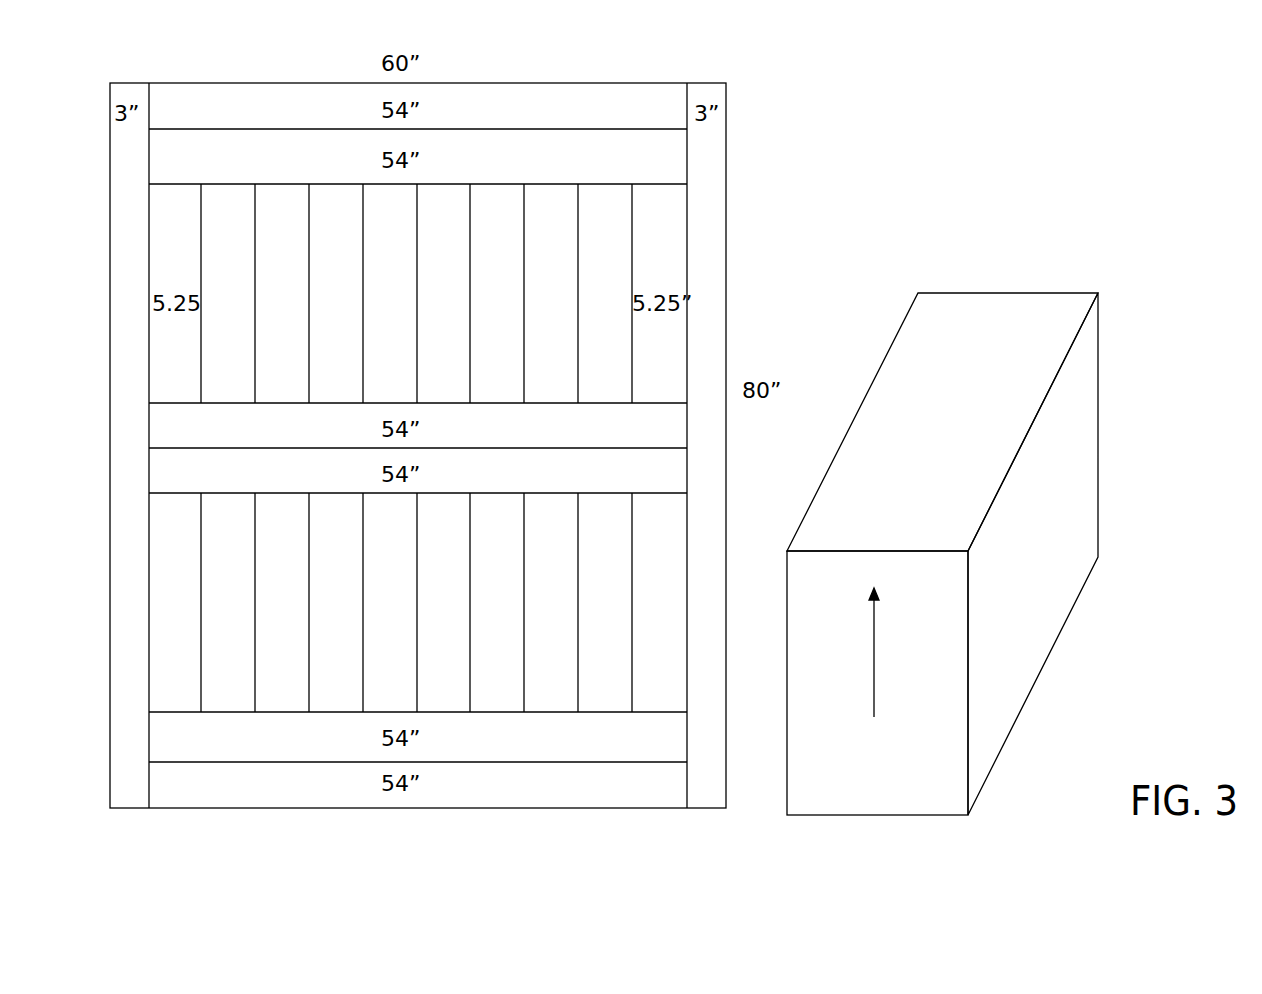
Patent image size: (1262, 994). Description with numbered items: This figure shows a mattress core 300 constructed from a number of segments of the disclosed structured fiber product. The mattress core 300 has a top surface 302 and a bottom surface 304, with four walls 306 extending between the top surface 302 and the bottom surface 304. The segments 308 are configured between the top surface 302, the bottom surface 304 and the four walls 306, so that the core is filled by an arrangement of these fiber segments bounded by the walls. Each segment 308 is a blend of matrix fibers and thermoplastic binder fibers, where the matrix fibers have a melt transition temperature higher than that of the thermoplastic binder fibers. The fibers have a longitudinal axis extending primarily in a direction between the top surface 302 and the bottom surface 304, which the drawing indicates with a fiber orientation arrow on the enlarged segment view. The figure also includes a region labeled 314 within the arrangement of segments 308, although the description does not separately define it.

The mattress core 300 is at (768, 52).
The top surface 302 is at (1007, 305).
The bottom surface 304 is at (1050, 665).
The walls 306 is at (527, 82).
The segments 308 is at (250, 95).
The vertical slat section 314 is at (545, 200).